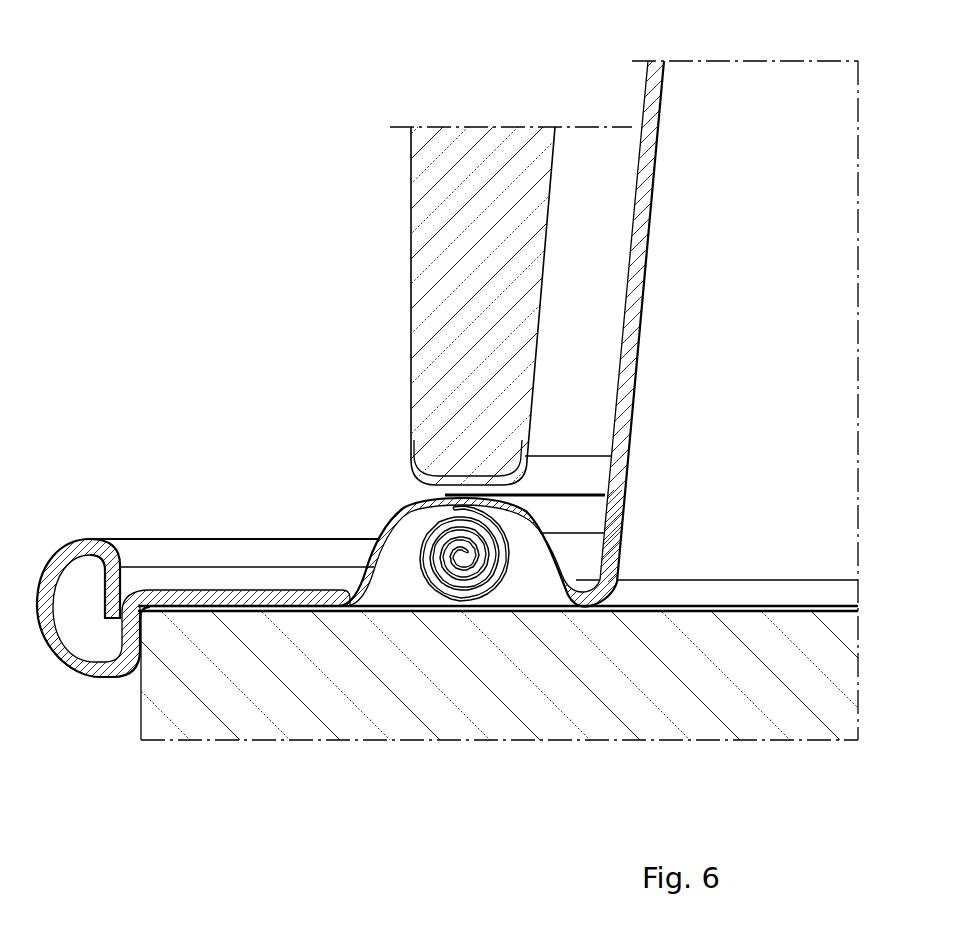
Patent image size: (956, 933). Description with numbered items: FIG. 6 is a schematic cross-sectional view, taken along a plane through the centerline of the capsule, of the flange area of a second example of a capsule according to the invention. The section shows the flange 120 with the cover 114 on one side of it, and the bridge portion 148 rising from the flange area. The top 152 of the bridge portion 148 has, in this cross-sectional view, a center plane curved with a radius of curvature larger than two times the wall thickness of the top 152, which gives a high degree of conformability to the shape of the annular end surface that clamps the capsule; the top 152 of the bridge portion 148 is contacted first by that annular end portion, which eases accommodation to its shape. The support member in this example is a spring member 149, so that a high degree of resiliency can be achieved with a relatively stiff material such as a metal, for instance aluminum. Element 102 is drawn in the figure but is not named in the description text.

The lid 102 is at (636, 96).
The cover 114 is at (733, 608).
The flange 120 is at (168, 585).
The bridge portion 148 is at (525, 511).
The spring member 149 is at (415, 580).
The top of the bridge portion 152 is at (466, 494).